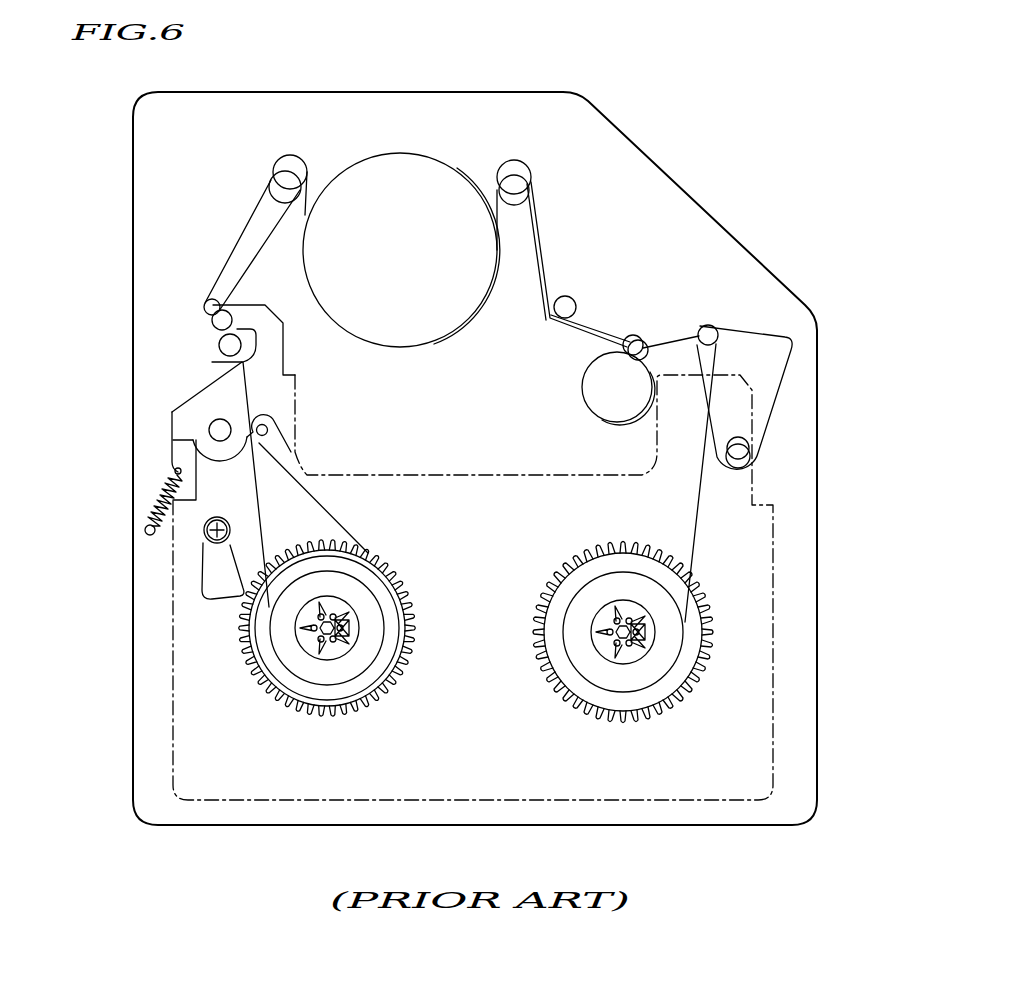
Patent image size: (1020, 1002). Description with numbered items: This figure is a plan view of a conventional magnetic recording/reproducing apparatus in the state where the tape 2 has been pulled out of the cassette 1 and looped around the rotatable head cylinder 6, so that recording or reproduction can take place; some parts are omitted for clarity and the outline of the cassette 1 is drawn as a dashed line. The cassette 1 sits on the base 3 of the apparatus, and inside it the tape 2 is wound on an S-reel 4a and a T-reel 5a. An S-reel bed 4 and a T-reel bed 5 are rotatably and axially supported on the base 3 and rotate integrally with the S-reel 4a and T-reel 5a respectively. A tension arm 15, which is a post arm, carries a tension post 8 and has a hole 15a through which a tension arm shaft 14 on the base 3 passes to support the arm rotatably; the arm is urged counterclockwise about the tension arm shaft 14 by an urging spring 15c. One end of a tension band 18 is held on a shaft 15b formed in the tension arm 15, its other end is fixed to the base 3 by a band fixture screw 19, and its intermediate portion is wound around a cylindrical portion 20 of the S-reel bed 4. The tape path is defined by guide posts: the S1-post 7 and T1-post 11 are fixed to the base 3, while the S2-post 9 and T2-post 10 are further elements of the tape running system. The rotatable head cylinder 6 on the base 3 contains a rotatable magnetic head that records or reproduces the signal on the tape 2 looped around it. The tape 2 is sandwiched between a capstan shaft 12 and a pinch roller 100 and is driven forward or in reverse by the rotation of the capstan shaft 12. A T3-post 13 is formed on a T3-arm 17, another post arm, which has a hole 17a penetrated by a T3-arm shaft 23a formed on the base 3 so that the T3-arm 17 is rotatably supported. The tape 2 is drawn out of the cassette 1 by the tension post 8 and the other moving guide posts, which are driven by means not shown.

The cassette 1 is at (778, 592).
The tape 2 is at (540, 240).
The base 3 is at (685, 190).
The S-reel bed 4 is at (347, 690).
The S-reel 4a is at (293, 660).
The T-reel bed 5 is at (557, 587).
The T-reel 5a is at (608, 592).
The rotatable head cylinder 6 is at (402, 173).
The S1-post 7 is at (227, 337).
The tension post 8 is at (207, 300).
The S2-post 9 is at (288, 168).
The T2-post 10 is at (518, 170).
The T1-post 11 is at (573, 300).
The capstan shaft 12 is at (635, 337).
The T3-post 13 is at (708, 325).
The tension arm shaft 14 is at (208, 430).
The tension arm 15 is at (218, 388).
The hole 15a is at (210, 418).
The shaft 15b is at (263, 437).
The tension spring 15c is at (160, 495).
The T3-arm 17 is at (758, 338).
The hole 17a is at (740, 436).
The tension band 18 is at (240, 598).
The band fixture screw 19 is at (203, 585).
The cylindrical portion 20 is at (383, 652).
The T3-arm shaft 23a is at (735, 468).
The pinch roller 100 is at (600, 393).